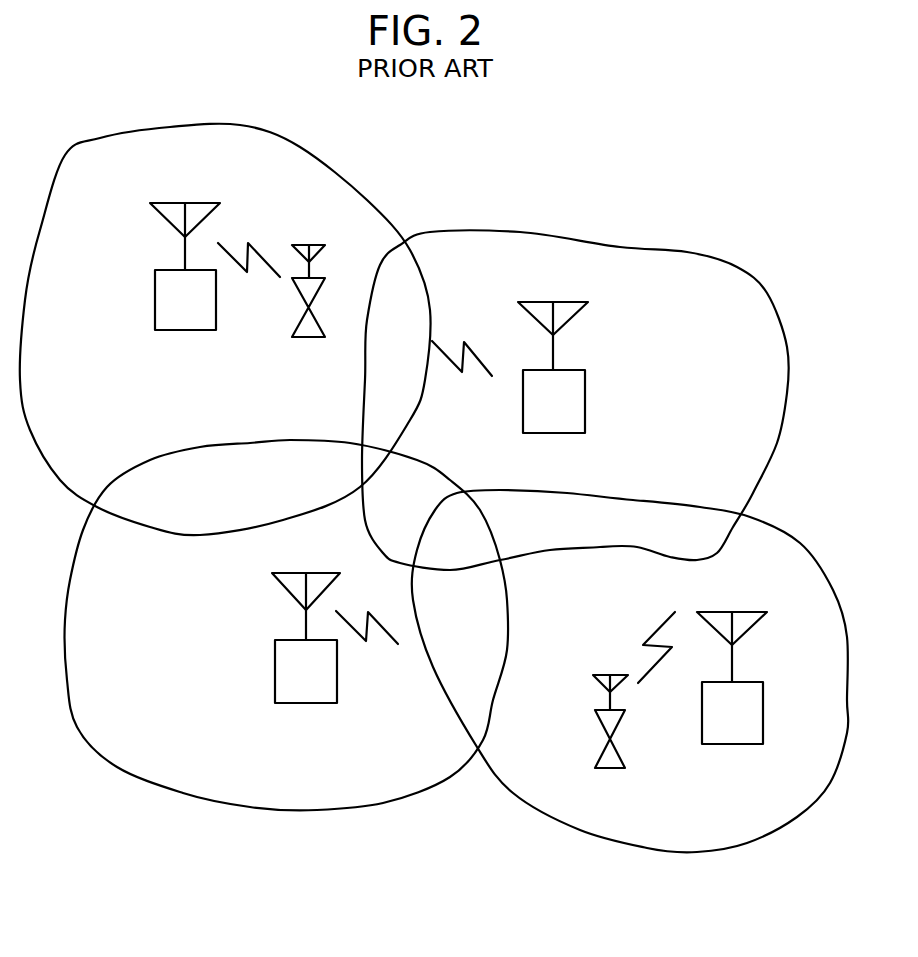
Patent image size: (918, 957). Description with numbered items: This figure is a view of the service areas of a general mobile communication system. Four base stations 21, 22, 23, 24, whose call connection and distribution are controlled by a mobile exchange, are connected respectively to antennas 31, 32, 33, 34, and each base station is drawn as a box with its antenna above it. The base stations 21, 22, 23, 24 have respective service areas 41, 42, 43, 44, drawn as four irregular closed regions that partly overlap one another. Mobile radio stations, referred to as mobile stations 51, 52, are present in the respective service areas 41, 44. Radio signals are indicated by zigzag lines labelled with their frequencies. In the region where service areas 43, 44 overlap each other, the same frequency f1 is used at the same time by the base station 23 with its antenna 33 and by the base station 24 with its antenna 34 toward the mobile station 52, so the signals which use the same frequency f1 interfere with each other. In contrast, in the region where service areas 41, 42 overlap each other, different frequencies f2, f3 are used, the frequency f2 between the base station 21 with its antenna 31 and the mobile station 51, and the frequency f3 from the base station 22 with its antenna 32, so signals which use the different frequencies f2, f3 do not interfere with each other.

The base station 21 is at (172, 333).
The base station 22 is at (585, 385).
The base station 23 is at (286, 703).
The base station 24 is at (727, 745).
The antenna 31 is at (195, 203).
The antenna 32 is at (575, 310).
The antenna 33 is at (272, 580).
The antenna 34 is at (745, 612).
The service area 41 is at (343, 170).
The service area 42 is at (647, 243).
The service area 43 is at (300, 812).
The service area 44 is at (660, 852).
The mobile station 51 is at (306, 338).
The mobile station 52 is at (595, 718).
The frequency f1 is at (505, 641).
The frequency f2 is at (249, 285).
The frequency f3 is at (462, 382).